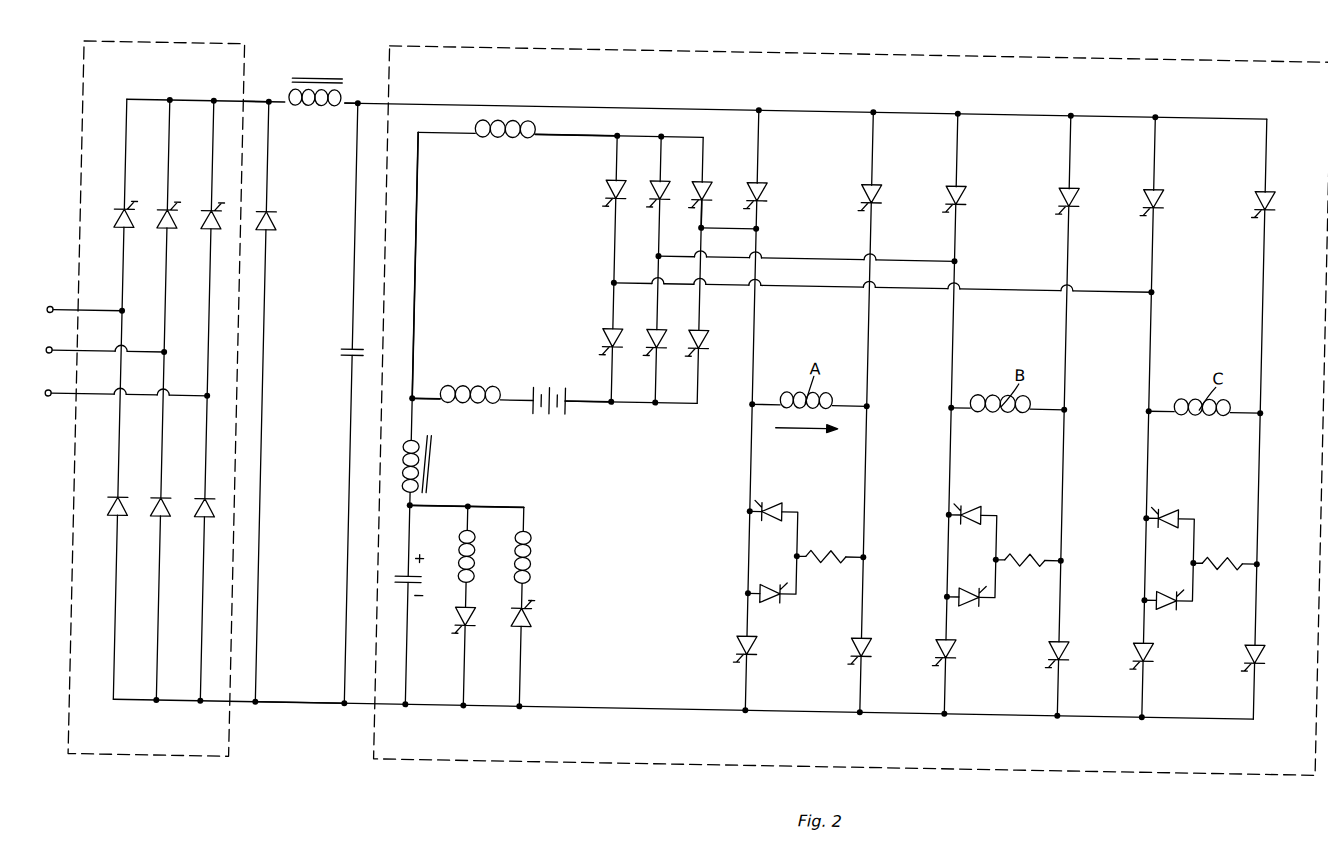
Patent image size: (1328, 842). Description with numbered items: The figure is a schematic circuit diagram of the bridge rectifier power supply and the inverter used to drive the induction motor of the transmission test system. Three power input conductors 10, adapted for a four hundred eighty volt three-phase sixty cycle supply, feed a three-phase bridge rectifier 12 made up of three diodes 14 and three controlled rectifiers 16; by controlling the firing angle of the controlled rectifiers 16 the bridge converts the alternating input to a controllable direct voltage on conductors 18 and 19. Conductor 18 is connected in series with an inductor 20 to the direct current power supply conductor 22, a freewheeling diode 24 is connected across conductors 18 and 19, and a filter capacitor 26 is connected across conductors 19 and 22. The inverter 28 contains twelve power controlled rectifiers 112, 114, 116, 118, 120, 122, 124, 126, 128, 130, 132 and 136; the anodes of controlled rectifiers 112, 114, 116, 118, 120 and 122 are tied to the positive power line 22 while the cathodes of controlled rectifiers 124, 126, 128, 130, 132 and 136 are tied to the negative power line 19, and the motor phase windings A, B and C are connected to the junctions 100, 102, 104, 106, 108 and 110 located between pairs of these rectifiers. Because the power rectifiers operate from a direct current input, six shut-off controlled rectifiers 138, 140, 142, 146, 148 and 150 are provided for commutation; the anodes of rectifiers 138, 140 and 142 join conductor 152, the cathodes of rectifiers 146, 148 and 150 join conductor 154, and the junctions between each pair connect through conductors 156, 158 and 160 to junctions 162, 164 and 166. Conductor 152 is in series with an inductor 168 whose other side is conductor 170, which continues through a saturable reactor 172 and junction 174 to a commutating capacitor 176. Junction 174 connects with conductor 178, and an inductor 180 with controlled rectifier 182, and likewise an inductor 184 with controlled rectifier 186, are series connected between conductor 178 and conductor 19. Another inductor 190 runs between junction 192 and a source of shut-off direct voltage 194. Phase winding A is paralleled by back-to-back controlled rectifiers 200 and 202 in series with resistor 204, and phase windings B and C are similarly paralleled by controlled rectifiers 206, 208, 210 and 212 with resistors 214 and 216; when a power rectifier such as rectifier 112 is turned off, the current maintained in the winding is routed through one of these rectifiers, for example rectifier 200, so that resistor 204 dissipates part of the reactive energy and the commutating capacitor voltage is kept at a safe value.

The power input conductors 10 is at (75, 392).
The three-phase bridge rectifier 12 is at (182, 40).
The diodes 14 is at (215, 512).
The controlled rectifiers 16 is at (212, 226).
The conductor 18 is at (257, 94).
The conductor 19 is at (321, 699).
The inductor 20 is at (327, 101).
The direct current power supply conductor 22 is at (353, 95).
The freewheeling diode 24 is at (283, 222).
The filter capacitor 26 is at (360, 352).
The inverter 28 is at (906, 39).
The junction 100 is at (759, 395).
The junction 102 is at (877, 390).
The junction 104 is at (958, 396).
The junction 106 is at (1075, 390).
The junction 108 is at (1155, 396).
The junction 110 is at (1271, 390).
The power controlled rectifier 112 is at (765, 172).
The power controlled rectifier 114 is at (880, 172).
The power controlled rectifier 116 is at (966, 172).
The power controlled rectifier 118 is at (1080, 172).
The power controlled rectifier 120 is at (1163, 172).
The power controlled rectifier 122 is at (1274, 172).
The power controlled rectifier 124 is at (770, 640).
The power controlled rectifier 126 is at (884, 640).
The power controlled rectifier 128 is at (968, 640).
The power controlled rectifier 130 is at (1082, 640).
The power controlled rectifier 132 is at (1166, 640).
The power controlled rectifier 136 is at (1278, 624).
The shut-off controlled rectifier 138 is at (612, 170).
The shut-off controlled rectifier 140 is at (658, 170).
The shut-off controlled rectifier 142 is at (700, 170).
The shut-off controlled rectifier 146 is at (626, 338).
The shut-off controlled rectifier 148 is at (668, 338).
The shut-off controlled rectifier 150 is at (714, 334).
The conductor 152 is at (566, 127).
The conductor 154 is at (583, 392).
The conductor 156 is at (724, 215).
The conductor 158 is at (803, 244).
The conductor 160 is at (1090, 272).
The junction 162 is at (775, 215).
The junction 164 is at (972, 244).
The junction 166 is at (1170, 272).
The inductor 168 is at (503, 130).
The conductor 170 is at (421, 197).
The saturable reactor 172 is at (441, 430).
The junction 174 is at (428, 496).
The commutating capacitor 176 is at (430, 564).
The conductor 178 is at (490, 497).
The inductor 180 is at (545, 550).
The controlled rectifier 182 is at (543, 612).
The inductor 184 is at (488, 540).
The controlled rectifier 186 is at (480, 620).
The inductor 190 is at (478, 385).
The junction 192 is at (425, 388).
The source of shut-off direct voltage 194 is at (552, 378).
The controlled rectifier 200 is at (788, 492).
The controlled rectifier 202 is at (790, 590).
The resistor 204 is at (838, 536).
The controlled rectifier 206 is at (990, 492).
The controlled rectifier 208 is at (980, 590).
The controlled rectifier 210 is at (1188, 492).
The controlled rectifier 212 is at (1180, 590).
The resistor 214 is at (1037, 536).
The resistor 216 is at (1230, 536).